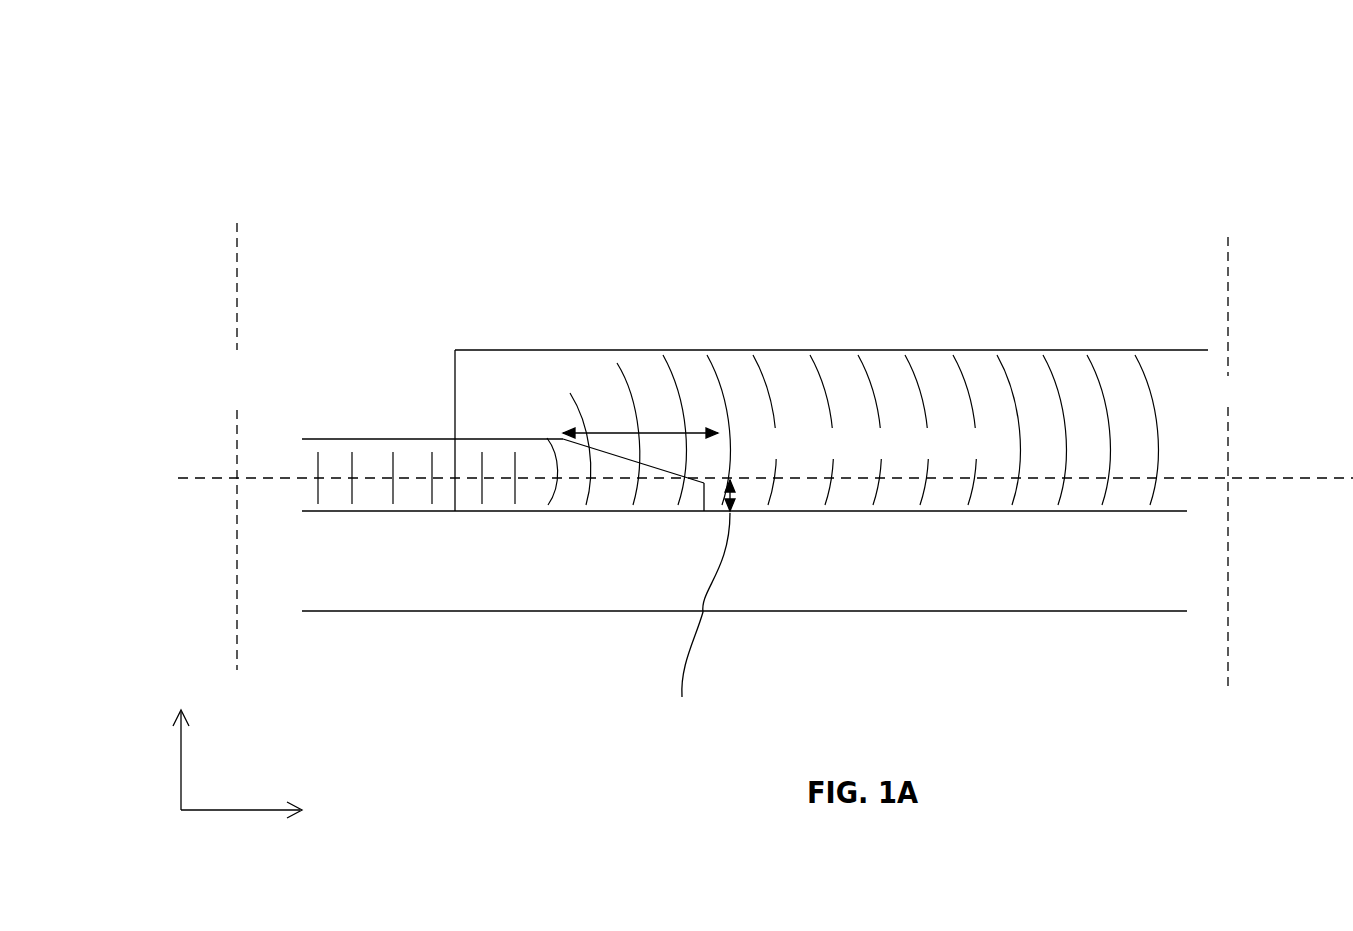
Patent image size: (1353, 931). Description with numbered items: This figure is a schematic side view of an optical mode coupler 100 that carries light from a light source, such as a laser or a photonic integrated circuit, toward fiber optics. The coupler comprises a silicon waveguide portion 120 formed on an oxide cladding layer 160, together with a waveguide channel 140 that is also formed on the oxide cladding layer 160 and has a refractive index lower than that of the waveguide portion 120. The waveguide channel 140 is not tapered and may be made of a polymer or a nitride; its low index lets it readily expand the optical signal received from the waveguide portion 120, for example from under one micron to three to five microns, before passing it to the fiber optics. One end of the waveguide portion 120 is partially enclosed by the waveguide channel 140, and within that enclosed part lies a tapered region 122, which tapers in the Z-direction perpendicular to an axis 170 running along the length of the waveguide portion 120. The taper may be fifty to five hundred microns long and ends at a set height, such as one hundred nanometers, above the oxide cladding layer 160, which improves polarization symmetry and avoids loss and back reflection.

The optical mode coupler 100 is at (885, 150).
The waveguide portion 120 is at (367, 428).
The tapered region 122 is at (625, 480).
The waveguide channel 140 is at (516, 331).
The oxide cladding layer 160 is at (420, 593).
The axis 170 is at (1320, 496).